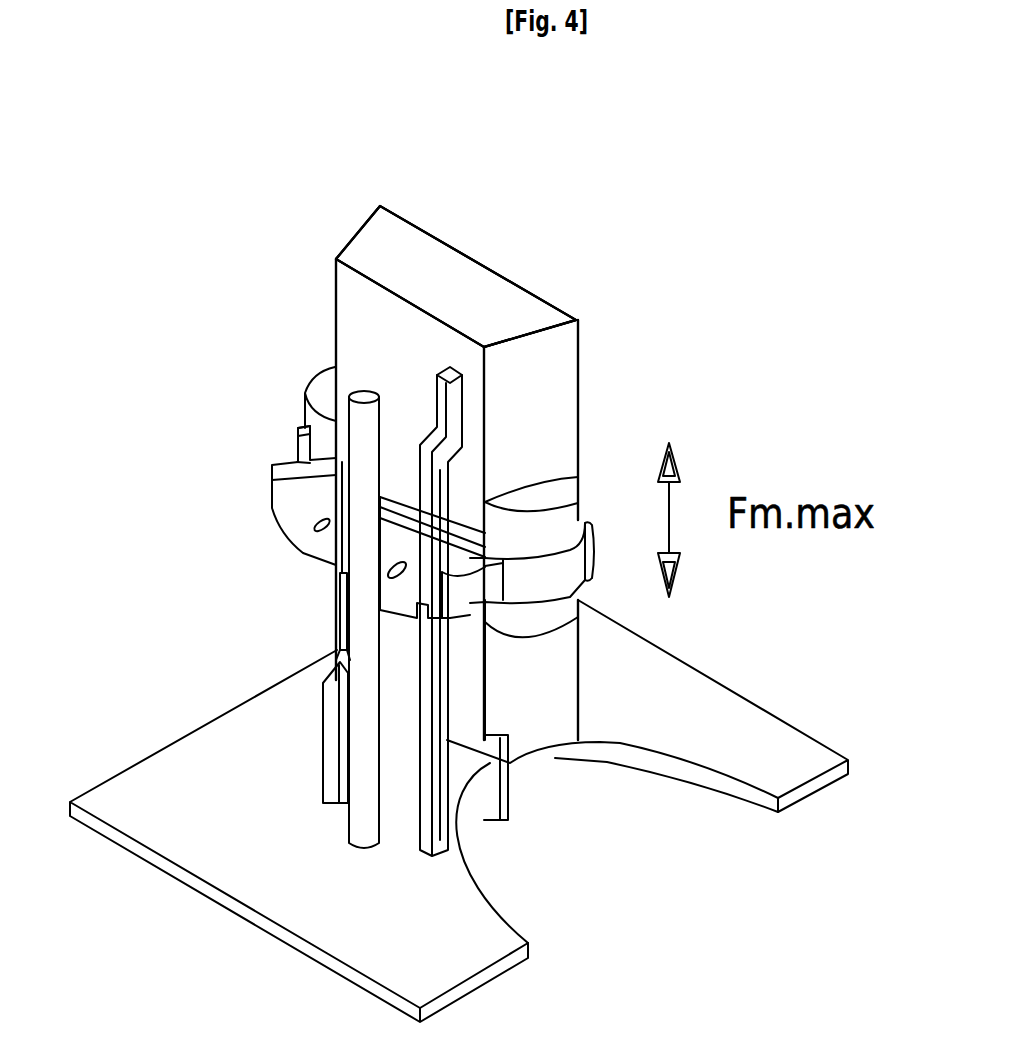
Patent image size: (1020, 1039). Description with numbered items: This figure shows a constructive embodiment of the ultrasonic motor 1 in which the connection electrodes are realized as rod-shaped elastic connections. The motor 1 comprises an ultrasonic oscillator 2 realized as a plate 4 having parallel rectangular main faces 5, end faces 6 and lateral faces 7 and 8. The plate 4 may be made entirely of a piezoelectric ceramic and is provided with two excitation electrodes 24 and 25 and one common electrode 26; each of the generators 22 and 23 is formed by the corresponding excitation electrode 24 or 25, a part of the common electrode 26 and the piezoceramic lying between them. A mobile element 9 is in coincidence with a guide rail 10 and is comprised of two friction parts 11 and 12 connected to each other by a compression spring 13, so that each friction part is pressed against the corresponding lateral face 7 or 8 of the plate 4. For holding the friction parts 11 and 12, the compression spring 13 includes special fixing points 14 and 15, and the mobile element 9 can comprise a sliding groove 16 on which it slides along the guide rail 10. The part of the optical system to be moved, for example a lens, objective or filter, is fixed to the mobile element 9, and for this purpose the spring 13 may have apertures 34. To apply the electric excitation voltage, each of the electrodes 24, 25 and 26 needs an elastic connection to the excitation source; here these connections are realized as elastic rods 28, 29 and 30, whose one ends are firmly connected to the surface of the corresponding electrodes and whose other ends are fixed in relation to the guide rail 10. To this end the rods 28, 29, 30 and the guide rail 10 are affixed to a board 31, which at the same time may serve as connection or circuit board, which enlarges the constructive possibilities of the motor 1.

The ultrasonic motor 1 is at (556, 194).
The ultrasonic oscillator 2 is at (450, 275).
The plate 4 is at (414, 252).
The main faces 5 is at (508, 274).
The end faces 6 is at (372, 246).
The lateral face 7 is at (330, 287).
The lateral face 8 is at (529, 352).
The mobile element 9 is at (268, 545).
The guide rail 10 is at (367, 780).
The friction part 11 is at (322, 380).
The friction part 12 is at (535, 502).
The compression spring 13 is at (305, 555).
The fixing point 14 is at (298, 431).
The fixing point 15 is at (553, 580).
The sliding groove 16 is at (333, 571).
The generator 22 is at (536, 393).
The generator 23 is at (536, 688).
The excitation electrode 24 is at (384, 358).
The excitation electrode 25 is at (462, 690).
The common electrode 26 is at (558, 304).
The elastic rod 28 is at (421, 829).
The elastic rod 29 is at (332, 735).
The elastic rod 30 is at (504, 797).
The board 31 is at (280, 863).
The apertures 34 is at (322, 526).